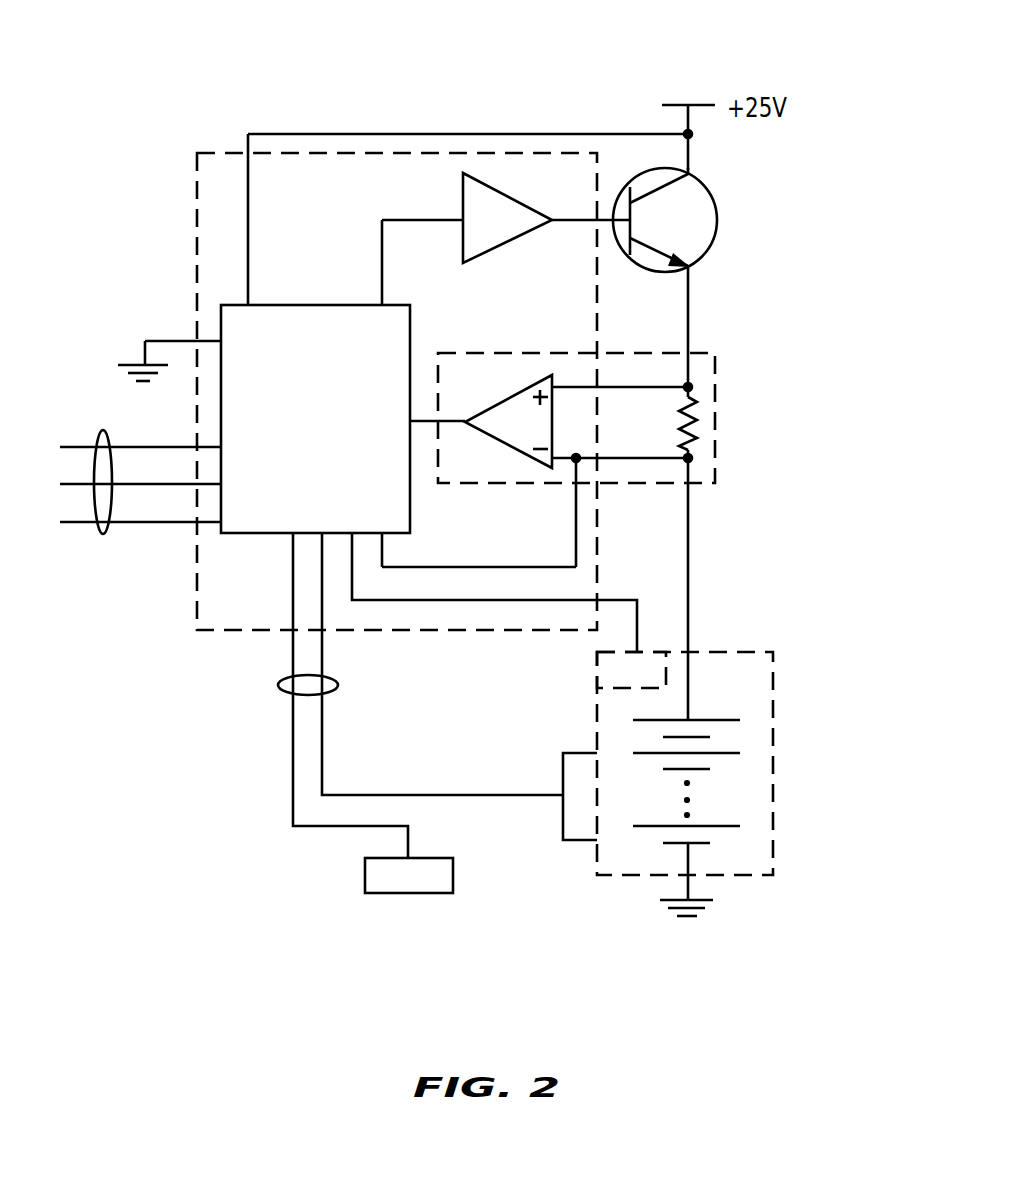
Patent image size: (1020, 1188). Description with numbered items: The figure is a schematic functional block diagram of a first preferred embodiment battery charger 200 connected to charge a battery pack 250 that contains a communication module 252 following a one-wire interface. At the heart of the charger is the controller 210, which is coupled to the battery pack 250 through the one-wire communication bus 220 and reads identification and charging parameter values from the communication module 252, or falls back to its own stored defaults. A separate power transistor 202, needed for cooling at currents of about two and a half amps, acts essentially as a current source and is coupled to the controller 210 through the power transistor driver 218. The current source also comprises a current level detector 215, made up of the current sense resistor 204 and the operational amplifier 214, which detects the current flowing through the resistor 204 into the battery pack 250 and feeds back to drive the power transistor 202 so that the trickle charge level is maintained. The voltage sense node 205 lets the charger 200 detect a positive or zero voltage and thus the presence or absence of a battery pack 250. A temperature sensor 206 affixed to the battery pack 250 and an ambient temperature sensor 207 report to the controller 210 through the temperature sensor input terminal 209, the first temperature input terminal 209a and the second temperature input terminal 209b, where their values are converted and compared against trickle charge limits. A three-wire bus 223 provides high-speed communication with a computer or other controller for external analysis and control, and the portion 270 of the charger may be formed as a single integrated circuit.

The battery charger 200 is at (157, 805).
The power transistor 202 is at (707, 187).
The current sense resistor 204 is at (694, 420).
The voltage sense node 205 is at (703, 468).
The temperature sensor 206 is at (580, 843).
The ambient temperature sensor 207 is at (407, 893).
The temperature sensor input terminal 209 is at (286, 698).
The first temperature input terminal 209a is at (293, 762).
The second temperature input terminal 209b is at (355, 795).
The controller 210 is at (277, 305).
The operational amplifier 214 is at (523, 390).
The current level detector 215 is at (718, 360).
The power transistor driver 218 is at (463, 190).
The one-wire communication bus 220 is at (478, 602).
The three-wire bus 223 is at (148, 536).
The battery pack 250 is at (727, 863).
The communication module 252 is at (603, 668).
The portion of battery charger 270 is at (212, 630).